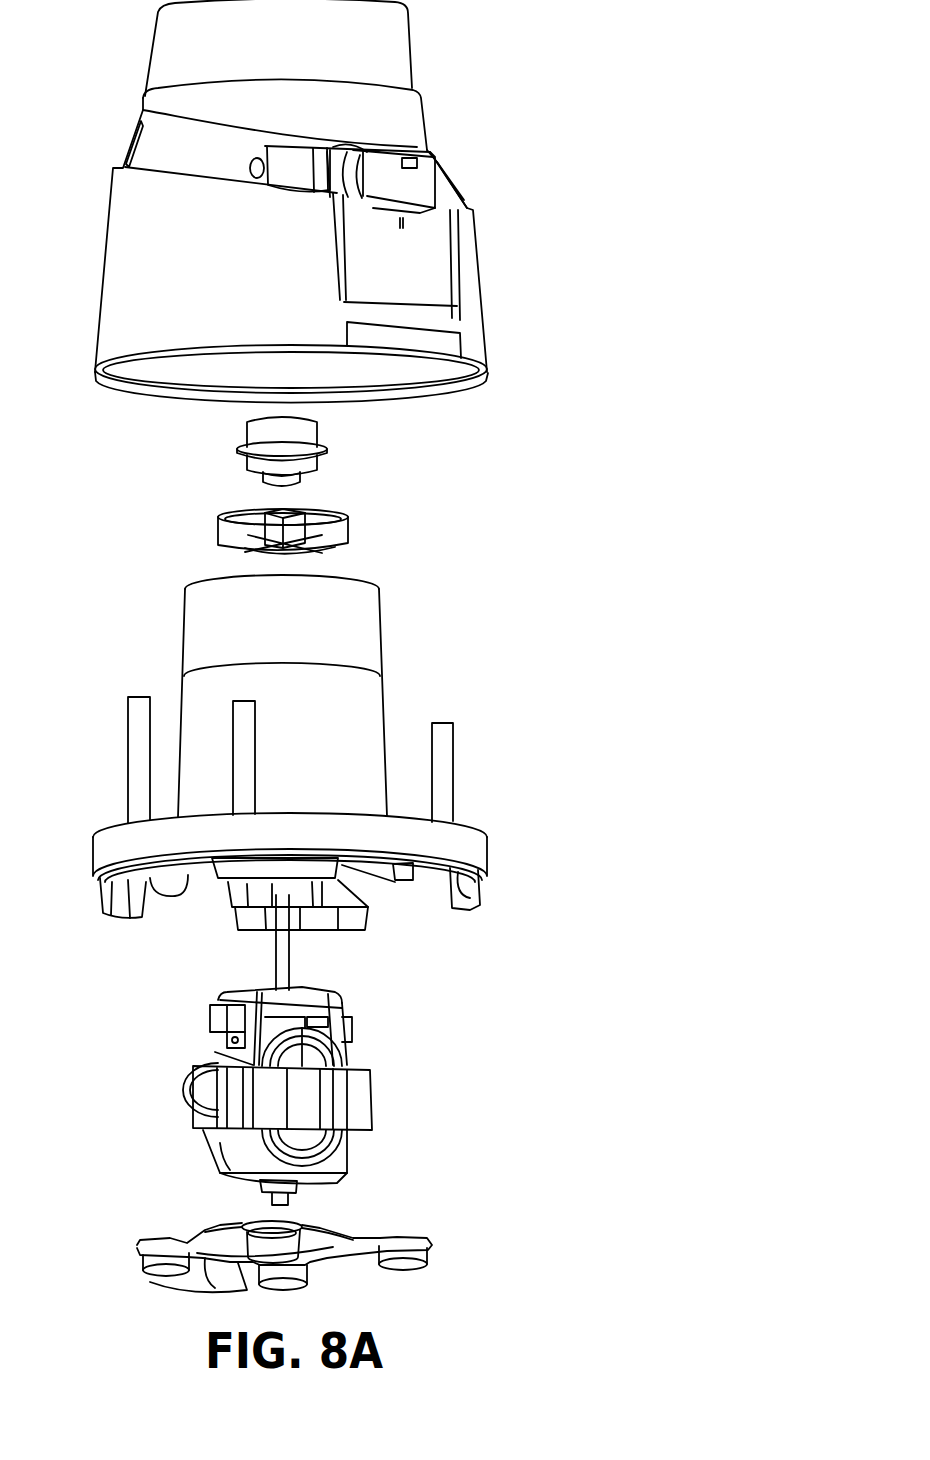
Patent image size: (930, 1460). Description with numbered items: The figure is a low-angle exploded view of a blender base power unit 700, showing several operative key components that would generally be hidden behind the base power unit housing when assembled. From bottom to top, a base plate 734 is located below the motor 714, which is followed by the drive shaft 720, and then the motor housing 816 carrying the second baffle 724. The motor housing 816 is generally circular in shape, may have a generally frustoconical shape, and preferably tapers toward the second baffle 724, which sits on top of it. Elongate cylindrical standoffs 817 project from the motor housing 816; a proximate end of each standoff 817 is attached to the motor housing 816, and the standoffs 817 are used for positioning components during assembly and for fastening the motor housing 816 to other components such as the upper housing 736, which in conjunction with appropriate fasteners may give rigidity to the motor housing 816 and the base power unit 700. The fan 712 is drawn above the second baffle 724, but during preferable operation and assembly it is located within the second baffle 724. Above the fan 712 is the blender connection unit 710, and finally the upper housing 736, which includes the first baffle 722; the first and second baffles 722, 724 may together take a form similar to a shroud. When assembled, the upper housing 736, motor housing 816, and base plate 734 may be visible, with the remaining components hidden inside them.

The base power unit 700 is at (494, 58).
The first baffle 722 is at (293, 155).
The upper housing 736 is at (468, 297).
The blender connection unit 710 is at (310, 430).
The fan 712 is at (333, 532).
The second baffle 724 is at (292, 675).
The motor housing 816 is at (360, 722).
The standoffs 817 is at (137, 743).
The drive shaft 720 is at (280, 962).
The motor 714 is at (352, 1102).
The base plate 734 is at (333, 1253).